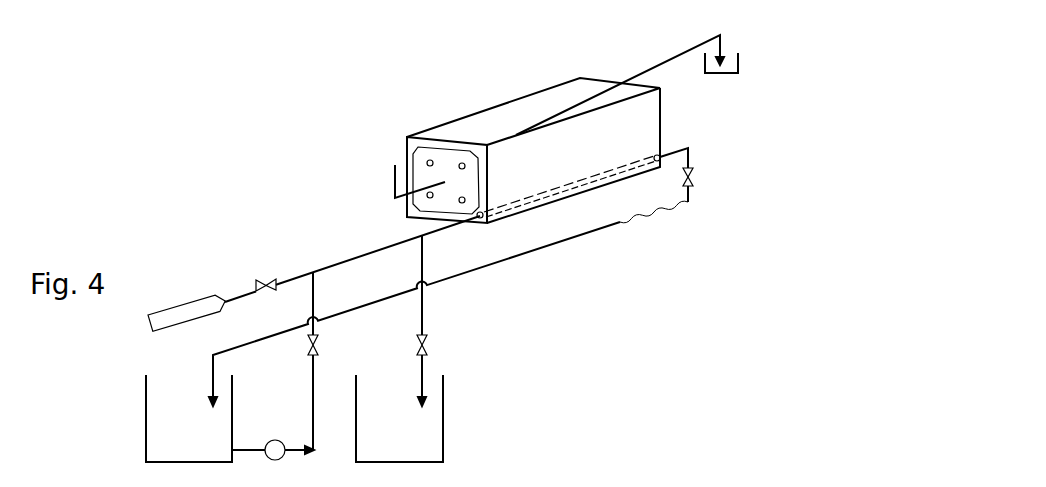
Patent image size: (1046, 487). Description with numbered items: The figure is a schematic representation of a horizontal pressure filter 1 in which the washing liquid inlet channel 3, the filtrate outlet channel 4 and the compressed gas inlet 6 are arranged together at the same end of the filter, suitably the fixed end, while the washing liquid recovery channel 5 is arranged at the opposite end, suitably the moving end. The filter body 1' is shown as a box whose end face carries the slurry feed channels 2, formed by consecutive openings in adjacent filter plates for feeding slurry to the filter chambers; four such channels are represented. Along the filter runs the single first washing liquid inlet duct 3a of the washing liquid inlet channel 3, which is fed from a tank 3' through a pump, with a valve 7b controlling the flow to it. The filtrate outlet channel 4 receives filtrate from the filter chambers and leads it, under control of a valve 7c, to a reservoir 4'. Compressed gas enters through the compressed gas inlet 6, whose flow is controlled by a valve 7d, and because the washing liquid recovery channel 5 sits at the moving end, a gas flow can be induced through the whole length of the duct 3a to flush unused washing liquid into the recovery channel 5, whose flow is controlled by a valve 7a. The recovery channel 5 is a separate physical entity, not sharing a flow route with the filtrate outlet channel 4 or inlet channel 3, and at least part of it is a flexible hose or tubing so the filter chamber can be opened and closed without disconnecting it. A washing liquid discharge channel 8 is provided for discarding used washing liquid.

The horizontal pressure filter 1 is at (846, 281).
The container / box being treated 1' is at (533, 131).
The slurry feed channel 2 is at (393, 178).
The washing liquid inlet channel 3 is at (273, 366).
The first tank 3' is at (189, 418).
The first washing liquid inlet duct 3a is at (545, 197).
The filtrate outlet channel 4 is at (455, 321).
The reservoir 4' is at (399, 418).
The washing liquid recovery channel 5 is at (213, 372).
The compressed gas inlet 6 is at (237, 293).
The valve 7a is at (693, 173).
The valve 7b is at (319, 347).
The valve 7c is at (425, 342).
The valve 7d is at (265, 280).
The washing liquid discharge channel 8 is at (665, 53).